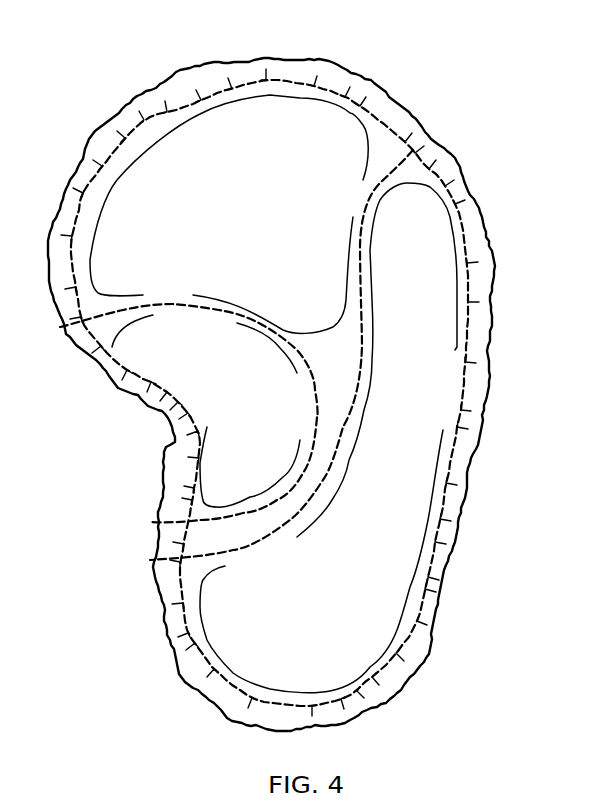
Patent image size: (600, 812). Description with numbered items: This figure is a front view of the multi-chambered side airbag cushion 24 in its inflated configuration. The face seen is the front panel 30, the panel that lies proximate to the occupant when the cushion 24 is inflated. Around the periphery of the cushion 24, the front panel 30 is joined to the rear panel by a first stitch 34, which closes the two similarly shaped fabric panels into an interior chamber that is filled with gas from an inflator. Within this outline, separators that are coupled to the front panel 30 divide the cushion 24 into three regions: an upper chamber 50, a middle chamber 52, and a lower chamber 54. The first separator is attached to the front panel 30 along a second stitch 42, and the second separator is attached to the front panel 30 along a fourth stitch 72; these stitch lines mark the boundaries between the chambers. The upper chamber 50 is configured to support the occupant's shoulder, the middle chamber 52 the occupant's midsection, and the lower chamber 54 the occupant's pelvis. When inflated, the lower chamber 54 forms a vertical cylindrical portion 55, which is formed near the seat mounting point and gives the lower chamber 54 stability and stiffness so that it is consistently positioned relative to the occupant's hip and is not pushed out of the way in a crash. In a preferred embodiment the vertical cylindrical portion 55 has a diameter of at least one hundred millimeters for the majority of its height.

The side airbag cushion 24 is at (131, 72).
The front panel 30 is at (215, 115).
The first stitch 34 is at (291, 82).
The upper chamber 50 is at (135, 203).
The fourth stitch 72 is at (367, 207).
The second stitch 42 is at (207, 311).
The middle chamber 52 is at (167, 362).
The vertical cylindrical portion 55 is at (438, 383).
The lower chamber 54 is at (375, 612).